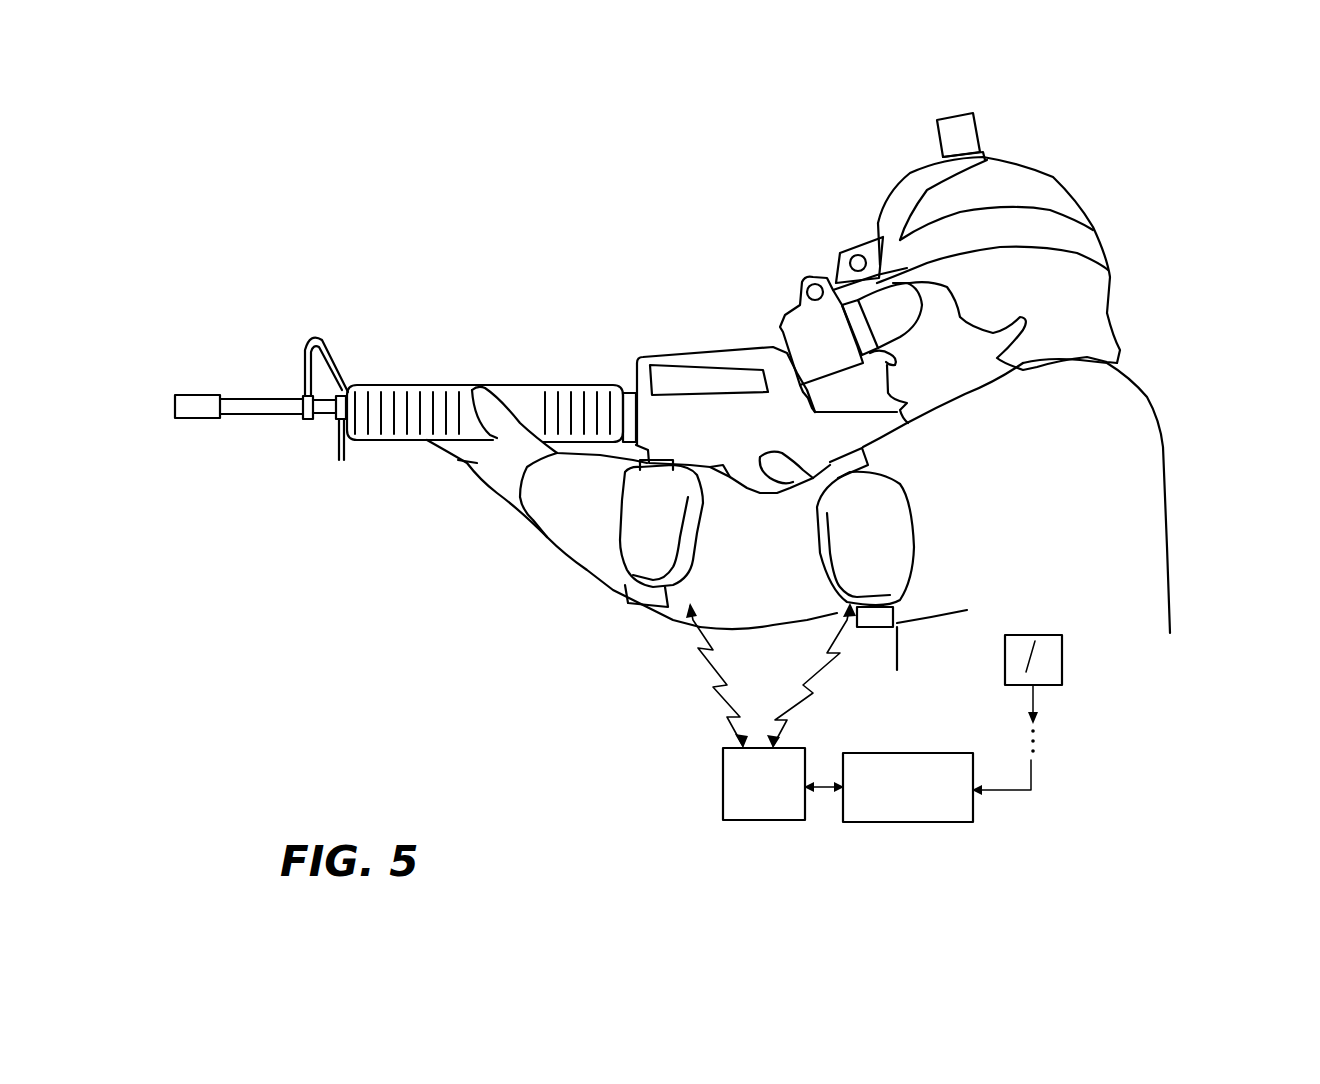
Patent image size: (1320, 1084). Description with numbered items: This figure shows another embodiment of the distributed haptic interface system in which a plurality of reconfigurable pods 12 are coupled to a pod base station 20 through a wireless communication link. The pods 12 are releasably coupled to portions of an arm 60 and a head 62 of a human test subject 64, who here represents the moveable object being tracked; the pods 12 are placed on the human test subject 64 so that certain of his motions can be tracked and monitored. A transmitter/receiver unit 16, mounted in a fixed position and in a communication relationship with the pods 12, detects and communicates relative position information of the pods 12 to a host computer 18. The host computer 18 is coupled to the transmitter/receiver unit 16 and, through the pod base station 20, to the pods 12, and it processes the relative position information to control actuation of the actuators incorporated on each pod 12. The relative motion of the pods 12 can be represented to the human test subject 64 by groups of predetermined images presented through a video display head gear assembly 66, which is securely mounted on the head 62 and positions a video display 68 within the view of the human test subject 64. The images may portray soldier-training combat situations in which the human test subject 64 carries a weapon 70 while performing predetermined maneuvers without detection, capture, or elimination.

The pods 12 is at (940, 118).
The transmitter/receiver units 16 is at (1063, 653).
The host computer 18 is at (927, 825).
The pod base station 20 is at (770, 823).
The arm 60 is at (555, 515).
The head 62 is at (1033, 177).
The human test subject 64 is at (1127, 527).
The video display head gear assembly 66 is at (850, 253).
The video display 68 is at (783, 323).
The weapon 70 is at (193, 394).